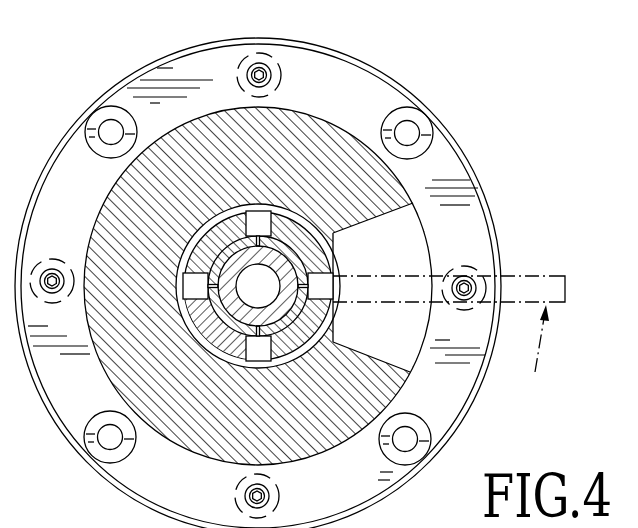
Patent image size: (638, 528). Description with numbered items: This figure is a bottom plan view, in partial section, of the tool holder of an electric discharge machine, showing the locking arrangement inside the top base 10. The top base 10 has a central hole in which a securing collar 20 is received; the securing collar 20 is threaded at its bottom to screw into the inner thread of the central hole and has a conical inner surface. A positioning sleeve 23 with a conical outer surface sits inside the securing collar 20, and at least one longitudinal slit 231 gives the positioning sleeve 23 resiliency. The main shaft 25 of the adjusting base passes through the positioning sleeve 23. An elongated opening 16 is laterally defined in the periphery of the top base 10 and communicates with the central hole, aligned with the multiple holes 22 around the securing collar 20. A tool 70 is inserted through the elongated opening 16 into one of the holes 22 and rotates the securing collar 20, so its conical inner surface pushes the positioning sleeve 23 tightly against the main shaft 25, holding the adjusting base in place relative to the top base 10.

The top base 10 is at (388, 190).
The elongated opening 16 is at (417, 233).
The securing collar 20 is at (323, 307).
The holes 22 is at (323, 276).
The positioning sleeve 23 is at (292, 253).
The slit 231 is at (262, 242).
The main shaft 25 is at (273, 253).
The tool 70 is at (528, 279).